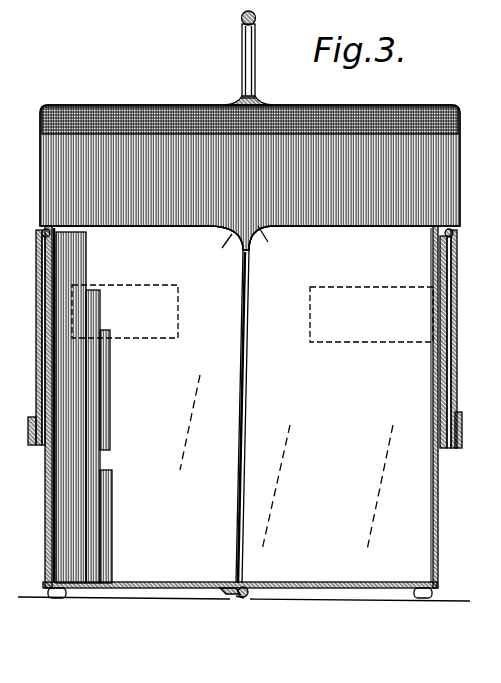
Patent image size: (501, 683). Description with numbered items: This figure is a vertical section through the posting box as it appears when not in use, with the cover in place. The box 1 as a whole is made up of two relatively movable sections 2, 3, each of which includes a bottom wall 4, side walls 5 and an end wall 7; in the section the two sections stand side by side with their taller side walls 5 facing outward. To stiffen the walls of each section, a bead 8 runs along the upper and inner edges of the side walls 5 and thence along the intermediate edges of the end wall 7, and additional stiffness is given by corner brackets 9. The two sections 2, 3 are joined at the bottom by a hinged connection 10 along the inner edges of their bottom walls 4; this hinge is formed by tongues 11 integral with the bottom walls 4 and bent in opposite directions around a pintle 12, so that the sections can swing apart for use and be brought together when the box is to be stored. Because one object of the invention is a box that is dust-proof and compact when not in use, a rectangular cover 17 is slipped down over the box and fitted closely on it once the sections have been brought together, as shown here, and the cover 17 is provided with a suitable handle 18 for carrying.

The box 1 is at (478, 493).
The section 2 is at (418, 538).
The section 3 is at (45, 533).
The bottom wall 4 is at (168, 582).
The side wall 5 is at (258, 232).
The end wall 7 is at (56, 264).
The bead 8 is at (43, 232).
The corner bracket 9 is at (40, 316).
The hinged connection 10 is at (244, 598).
The tongue 11 is at (229, 591).
The pintle 12 is at (238, 598).
The cover 17 is at (372, 107).
The handle 18 is at (256, 42).